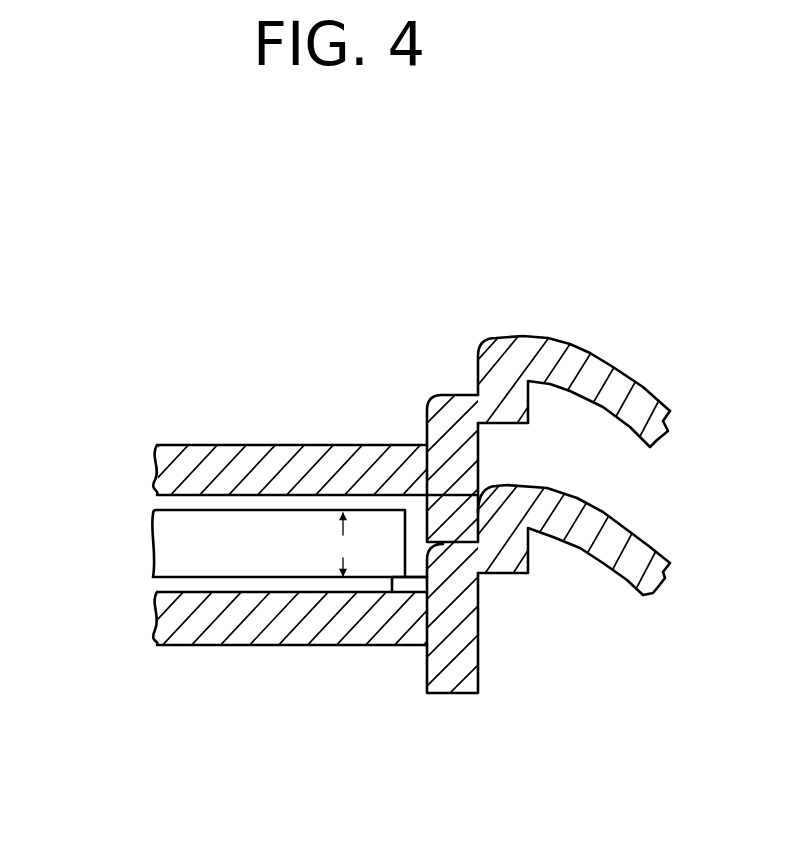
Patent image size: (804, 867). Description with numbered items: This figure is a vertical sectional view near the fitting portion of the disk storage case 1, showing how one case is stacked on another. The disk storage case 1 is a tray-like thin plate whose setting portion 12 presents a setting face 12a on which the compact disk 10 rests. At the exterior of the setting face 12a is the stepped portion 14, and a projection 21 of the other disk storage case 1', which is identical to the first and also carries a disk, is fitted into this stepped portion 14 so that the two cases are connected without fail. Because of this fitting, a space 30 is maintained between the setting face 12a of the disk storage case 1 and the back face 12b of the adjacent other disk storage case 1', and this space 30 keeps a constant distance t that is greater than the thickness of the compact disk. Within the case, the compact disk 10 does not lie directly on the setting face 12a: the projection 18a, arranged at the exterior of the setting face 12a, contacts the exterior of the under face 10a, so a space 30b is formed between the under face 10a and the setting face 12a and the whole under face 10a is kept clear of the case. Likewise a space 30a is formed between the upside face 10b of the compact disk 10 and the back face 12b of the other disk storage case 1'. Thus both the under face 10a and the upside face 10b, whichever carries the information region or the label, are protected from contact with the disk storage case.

The disk storage case 1 is at (315, 586).
The other disk storage case 1' is at (149, 354).
The compact disk 10 is at (160, 556).
The under face 10a is at (227, 581).
The upside face 10b is at (160, 508).
The setting portion 12 is at (322, 441).
The setting face 12a is at (277, 444).
The back face 12b is at (232, 498).
The stepped portion 14 is at (478, 373).
The projection 18a is at (410, 590).
The projection 21 is at (479, 574).
The space 30 is at (416, 540).
The space 30a is at (195, 504).
The space 30b is at (288, 584).
The distance t is at (344, 544).